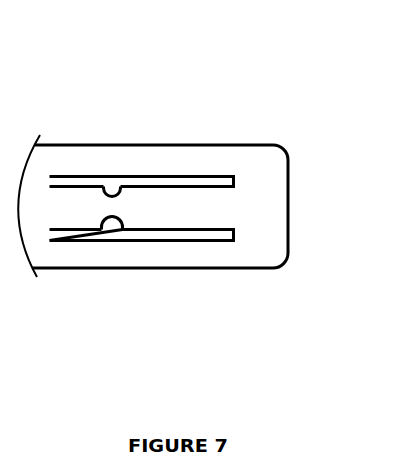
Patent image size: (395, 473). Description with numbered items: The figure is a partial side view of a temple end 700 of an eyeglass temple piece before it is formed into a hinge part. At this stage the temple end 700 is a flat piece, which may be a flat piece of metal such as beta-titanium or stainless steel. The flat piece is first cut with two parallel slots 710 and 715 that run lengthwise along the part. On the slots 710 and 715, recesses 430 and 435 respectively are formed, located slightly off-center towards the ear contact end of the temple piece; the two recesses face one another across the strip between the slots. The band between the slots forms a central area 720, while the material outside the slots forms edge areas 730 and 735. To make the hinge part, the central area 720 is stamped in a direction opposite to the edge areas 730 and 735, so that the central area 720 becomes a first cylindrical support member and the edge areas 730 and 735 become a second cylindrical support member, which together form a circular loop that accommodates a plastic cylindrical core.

The temple end 700 is at (199, 191).
The slot 710 is at (142, 288).
The slot 715 is at (163, 122).
The central area 720 is at (193, 207).
The edge area 730 is at (102, 157).
The edge area 735 is at (132, 255).
The recess 430 is at (113, 192).
The recess 435 is at (113, 225).